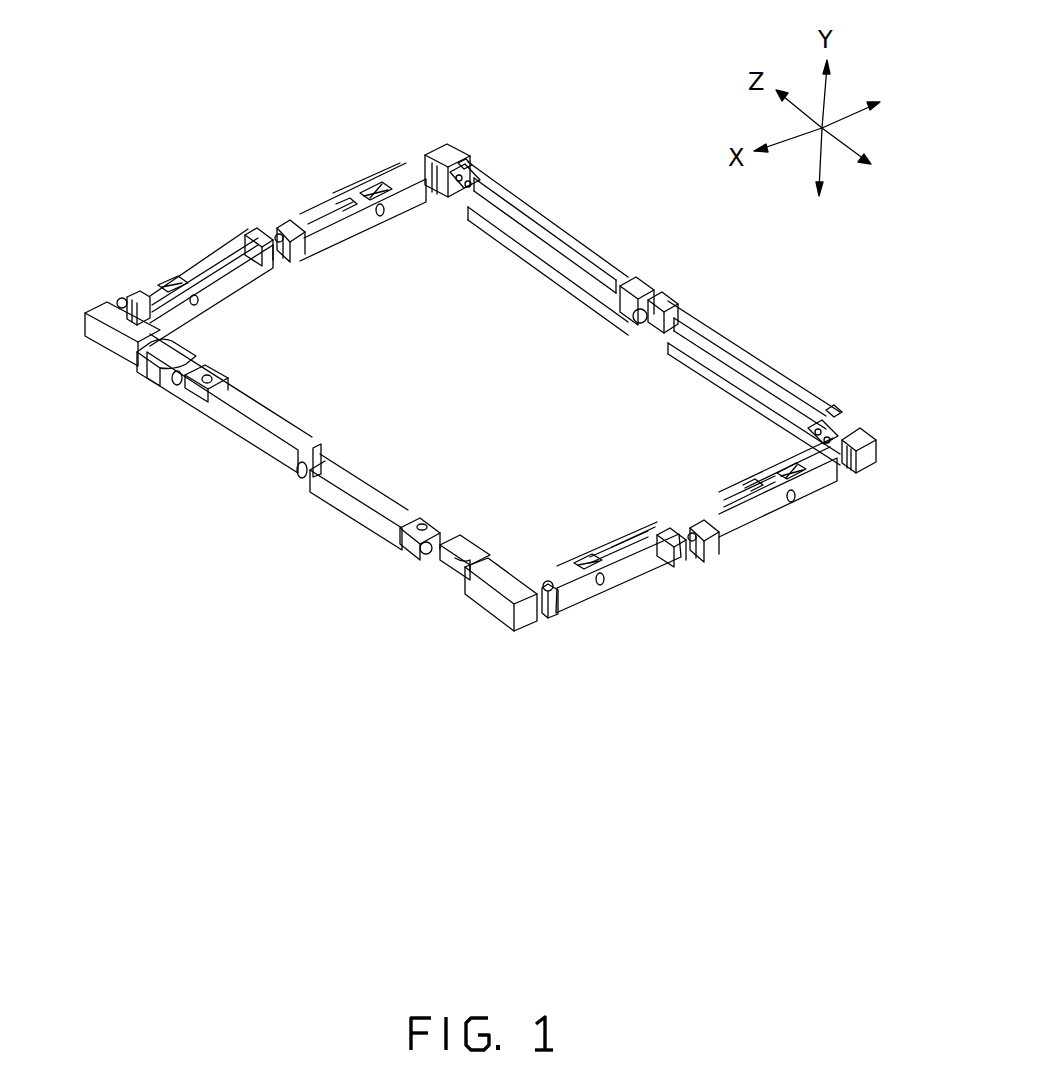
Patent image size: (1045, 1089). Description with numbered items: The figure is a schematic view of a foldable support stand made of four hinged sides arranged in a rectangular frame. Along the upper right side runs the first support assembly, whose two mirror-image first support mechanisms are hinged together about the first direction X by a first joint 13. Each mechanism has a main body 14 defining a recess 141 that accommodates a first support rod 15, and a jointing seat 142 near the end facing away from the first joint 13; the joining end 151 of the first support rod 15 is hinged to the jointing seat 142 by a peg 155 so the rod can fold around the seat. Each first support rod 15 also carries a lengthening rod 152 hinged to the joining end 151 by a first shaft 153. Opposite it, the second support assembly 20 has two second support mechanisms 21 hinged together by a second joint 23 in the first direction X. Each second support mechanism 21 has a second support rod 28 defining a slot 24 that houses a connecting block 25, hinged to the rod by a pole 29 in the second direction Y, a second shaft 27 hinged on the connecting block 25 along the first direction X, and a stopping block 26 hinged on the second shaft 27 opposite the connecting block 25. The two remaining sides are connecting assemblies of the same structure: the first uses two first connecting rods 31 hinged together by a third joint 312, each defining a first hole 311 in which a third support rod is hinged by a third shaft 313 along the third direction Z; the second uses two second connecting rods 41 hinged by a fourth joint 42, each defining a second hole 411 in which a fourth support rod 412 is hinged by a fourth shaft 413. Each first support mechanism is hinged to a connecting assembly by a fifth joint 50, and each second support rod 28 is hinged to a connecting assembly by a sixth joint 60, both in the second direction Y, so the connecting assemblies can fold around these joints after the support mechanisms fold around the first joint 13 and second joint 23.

The first joint 13 is at (655, 290).
The main body 14 is at (770, 382).
The first support rod 15 is at (529, 250).
The recess 141 is at (745, 405).
The jointing seat 142 is at (838, 420).
The joining end 151 is at (822, 430).
The lengthening rod 152 is at (545, 222).
The first shaft 153 is at (462, 184).
The peg 155 is at (824, 442).
The second support assembly 20 is at (313, 602).
The second support mechanism 21 is at (237, 430).
The second joint 23 is at (303, 470).
The slot 24 is at (142, 362).
The connecting block 25 is at (415, 540).
The stopping block 26 is at (463, 562).
The second shaft 27 is at (425, 552).
The second support rod 28 is at (500, 598).
The pole 29 is at (422, 525).
The first connecting rod 31 is at (738, 526).
The first hole 311 is at (602, 584).
The third joint 312 is at (622, 540).
The third shaft 313 is at (795, 500).
The second connecting rod 41 is at (392, 178).
The second hole 411 is at (170, 283).
The fourth support rod 412 is at (222, 252).
The fourth shaft 413 is at (198, 303).
The fourth joint 42 is at (285, 237).
The fifth joint 50 is at (432, 165).
The sixth joint 60 is at (120, 301).